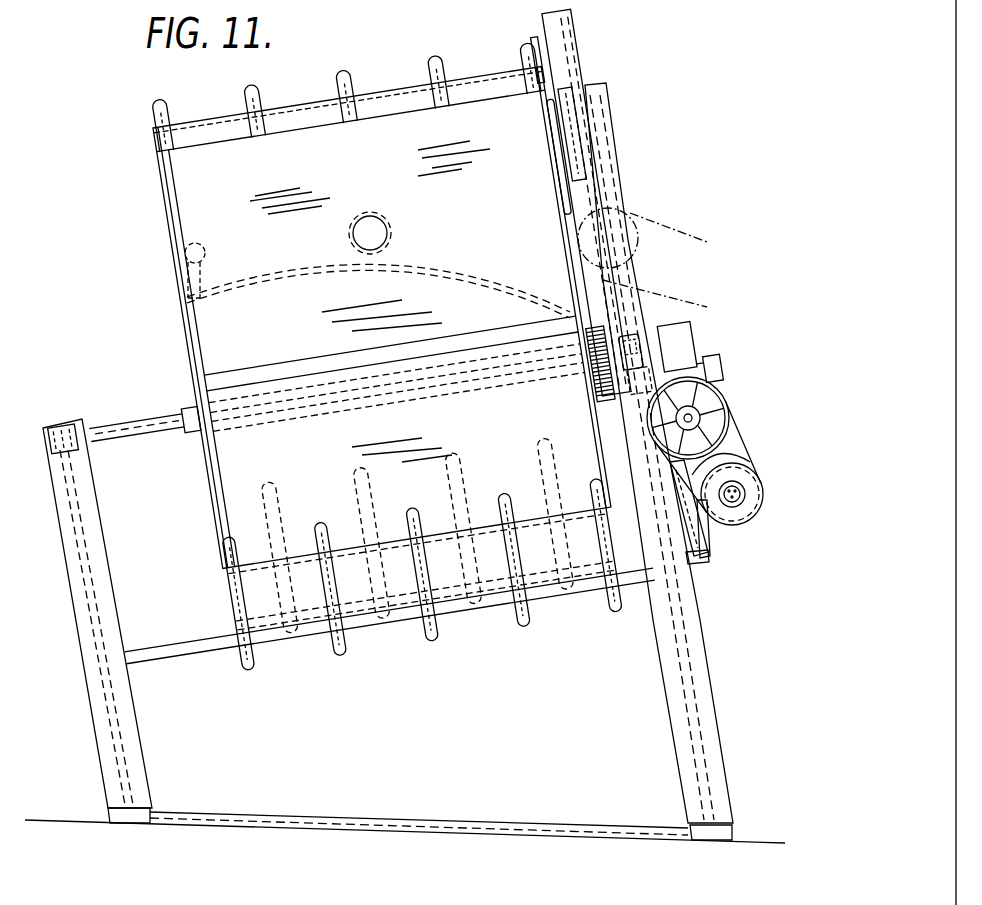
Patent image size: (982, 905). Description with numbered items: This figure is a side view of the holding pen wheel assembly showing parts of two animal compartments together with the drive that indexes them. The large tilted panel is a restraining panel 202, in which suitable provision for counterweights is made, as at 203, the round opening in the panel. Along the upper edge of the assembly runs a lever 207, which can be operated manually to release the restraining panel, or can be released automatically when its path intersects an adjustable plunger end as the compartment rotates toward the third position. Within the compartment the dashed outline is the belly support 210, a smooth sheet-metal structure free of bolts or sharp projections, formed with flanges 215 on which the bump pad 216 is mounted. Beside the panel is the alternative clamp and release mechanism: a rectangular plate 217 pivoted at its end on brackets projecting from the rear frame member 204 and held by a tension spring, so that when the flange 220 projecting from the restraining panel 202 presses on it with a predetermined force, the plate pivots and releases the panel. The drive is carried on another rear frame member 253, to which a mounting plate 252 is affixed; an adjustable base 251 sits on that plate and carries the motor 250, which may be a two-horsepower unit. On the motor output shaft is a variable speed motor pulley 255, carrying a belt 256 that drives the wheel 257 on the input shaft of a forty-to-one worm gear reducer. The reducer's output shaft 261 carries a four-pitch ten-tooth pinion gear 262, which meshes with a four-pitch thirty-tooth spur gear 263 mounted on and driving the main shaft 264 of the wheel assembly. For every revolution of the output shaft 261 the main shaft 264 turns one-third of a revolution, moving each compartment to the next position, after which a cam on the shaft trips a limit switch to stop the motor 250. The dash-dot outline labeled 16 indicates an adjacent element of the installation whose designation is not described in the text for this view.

The conveyor 16 is at (672, 224).
The restraining panel 202 is at (173, 190).
The counterweight provision 203 is at (390, 232).
The rear frame member 204 is at (592, 84).
The lever 207 is at (540, 45).
The belly support 210 is at (232, 299).
The flange 215 is at (188, 285).
The bump pad 216 is at (183, 251).
The rectangular plate 217 is at (556, 42).
The flange 220 is at (545, 88).
The motor 250 is at (716, 472).
The adjustable base 251 is at (708, 535).
The mounting plate 252 is at (693, 565).
The rear frame member 253 is at (694, 613).
The variable speed motor pulley 255 is at (760, 496).
The belt 256 is at (737, 430).
The wheel 257 is at (702, 406).
The output shaft 261 is at (714, 360).
The pinion gear 262 is at (600, 392).
The spur gear 263 is at (600, 335).
The main shaft 264 is at (148, 427).